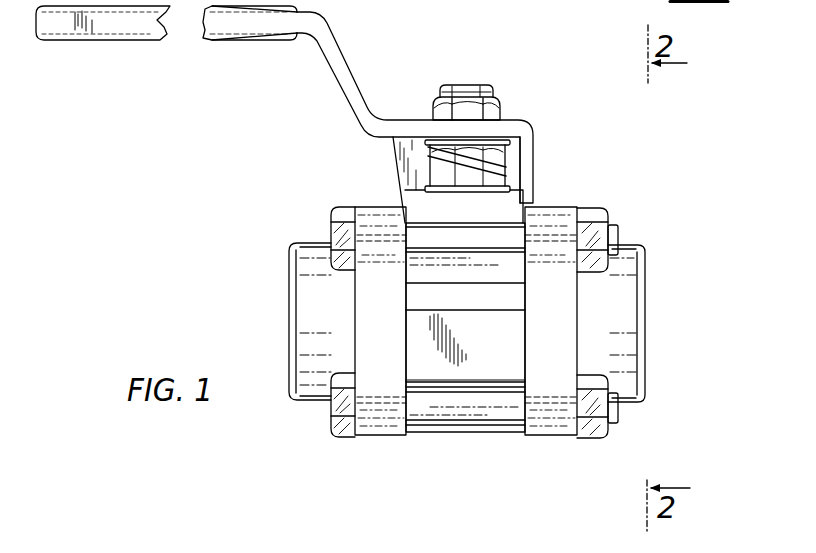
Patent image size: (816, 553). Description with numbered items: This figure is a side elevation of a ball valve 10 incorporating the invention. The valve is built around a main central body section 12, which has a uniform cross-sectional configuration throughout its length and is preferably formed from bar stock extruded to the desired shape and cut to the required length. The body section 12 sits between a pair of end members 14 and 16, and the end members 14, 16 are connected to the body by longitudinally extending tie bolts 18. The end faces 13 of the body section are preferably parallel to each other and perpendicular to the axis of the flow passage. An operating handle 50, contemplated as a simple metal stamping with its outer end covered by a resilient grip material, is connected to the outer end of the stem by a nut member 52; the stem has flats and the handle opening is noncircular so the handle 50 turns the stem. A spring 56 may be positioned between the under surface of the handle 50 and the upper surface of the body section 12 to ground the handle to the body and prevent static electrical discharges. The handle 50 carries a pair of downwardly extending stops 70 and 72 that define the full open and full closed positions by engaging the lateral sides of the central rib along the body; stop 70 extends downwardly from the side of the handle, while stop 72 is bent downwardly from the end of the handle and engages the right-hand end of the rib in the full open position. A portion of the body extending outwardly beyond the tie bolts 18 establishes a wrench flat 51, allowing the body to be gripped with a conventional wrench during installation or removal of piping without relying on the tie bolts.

The valve 10 is at (652, 126).
The main central body section 12 is at (461, 467).
The end faces 13 is at (406, 339).
The end member 14 is at (278, 425).
The end member 16 is at (631, 422).
The tie bolts 18 is at (455, 252).
The operating handle 50 is at (356, 106).
The wrench flat 51 is at (432, 380).
The nut member 52 is at (503, 110).
The spring 56 is at (510, 171).
The stop 70 is at (408, 164).
The stop 72 is at (535, 148).